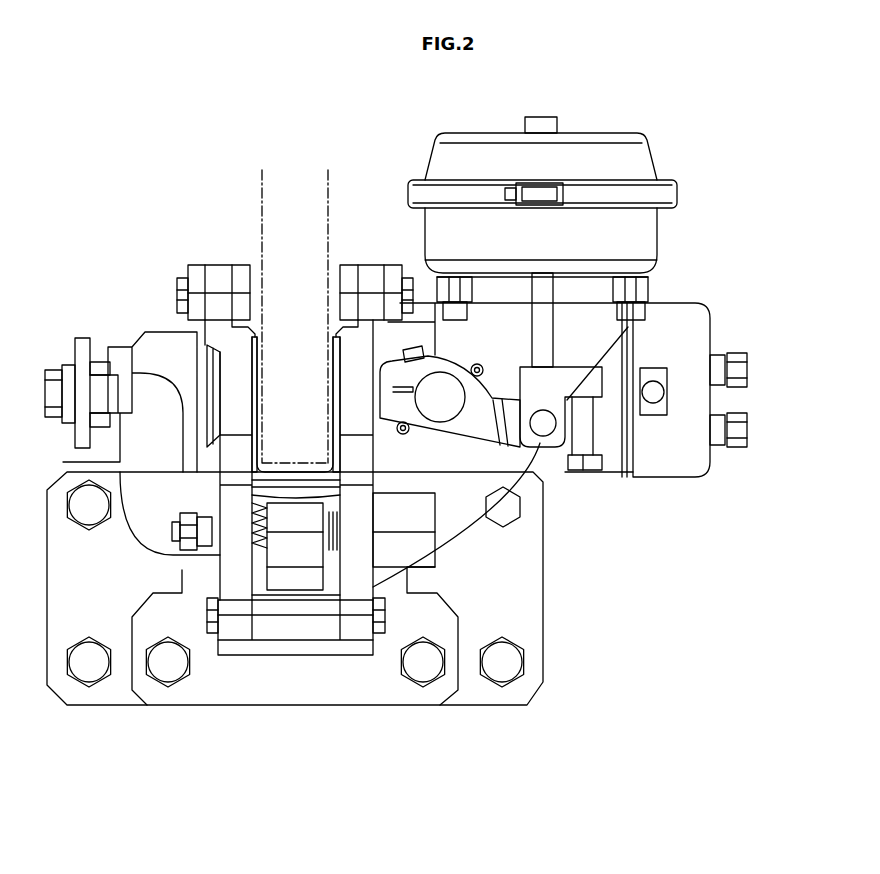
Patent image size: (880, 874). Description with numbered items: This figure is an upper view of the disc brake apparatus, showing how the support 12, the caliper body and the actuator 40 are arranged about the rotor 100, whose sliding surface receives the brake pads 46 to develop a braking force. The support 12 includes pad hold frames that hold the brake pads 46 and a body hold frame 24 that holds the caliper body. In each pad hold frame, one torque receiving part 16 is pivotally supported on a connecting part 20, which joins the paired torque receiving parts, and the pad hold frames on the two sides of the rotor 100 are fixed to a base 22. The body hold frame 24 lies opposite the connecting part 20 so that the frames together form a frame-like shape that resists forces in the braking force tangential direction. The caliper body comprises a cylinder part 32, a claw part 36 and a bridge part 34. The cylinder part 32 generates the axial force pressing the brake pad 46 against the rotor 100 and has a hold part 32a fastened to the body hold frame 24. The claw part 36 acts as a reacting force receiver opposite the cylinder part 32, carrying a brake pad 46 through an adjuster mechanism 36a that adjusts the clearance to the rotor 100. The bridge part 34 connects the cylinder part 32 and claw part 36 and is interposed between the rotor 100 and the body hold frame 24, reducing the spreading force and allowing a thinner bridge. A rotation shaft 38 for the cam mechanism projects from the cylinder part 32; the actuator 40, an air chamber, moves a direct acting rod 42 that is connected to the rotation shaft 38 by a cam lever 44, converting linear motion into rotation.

The support 12 is at (392, 428).
The rotor 100 is at (262, 177).
The connecting part 20 is at (243, 273).
The brake pad 46 is at (329, 379).
The body hold frame 24 is at (312, 648).
The bridge part 34 is at (257, 567).
The hold part 32a is at (418, 512).
The one torque receiving part 16 is at (228, 561).
The base 22 is at (482, 690).
The claw part 36 is at (163, 338).
The adjuster mechanism 36a is at (83, 340).
The actuator 40 is at (637, 157).
The direct acting rod 42 is at (545, 330).
The cam lever 44 is at (489, 408).
The rotation shaft 38 is at (441, 408).
The cylinder part 32 is at (535, 490).